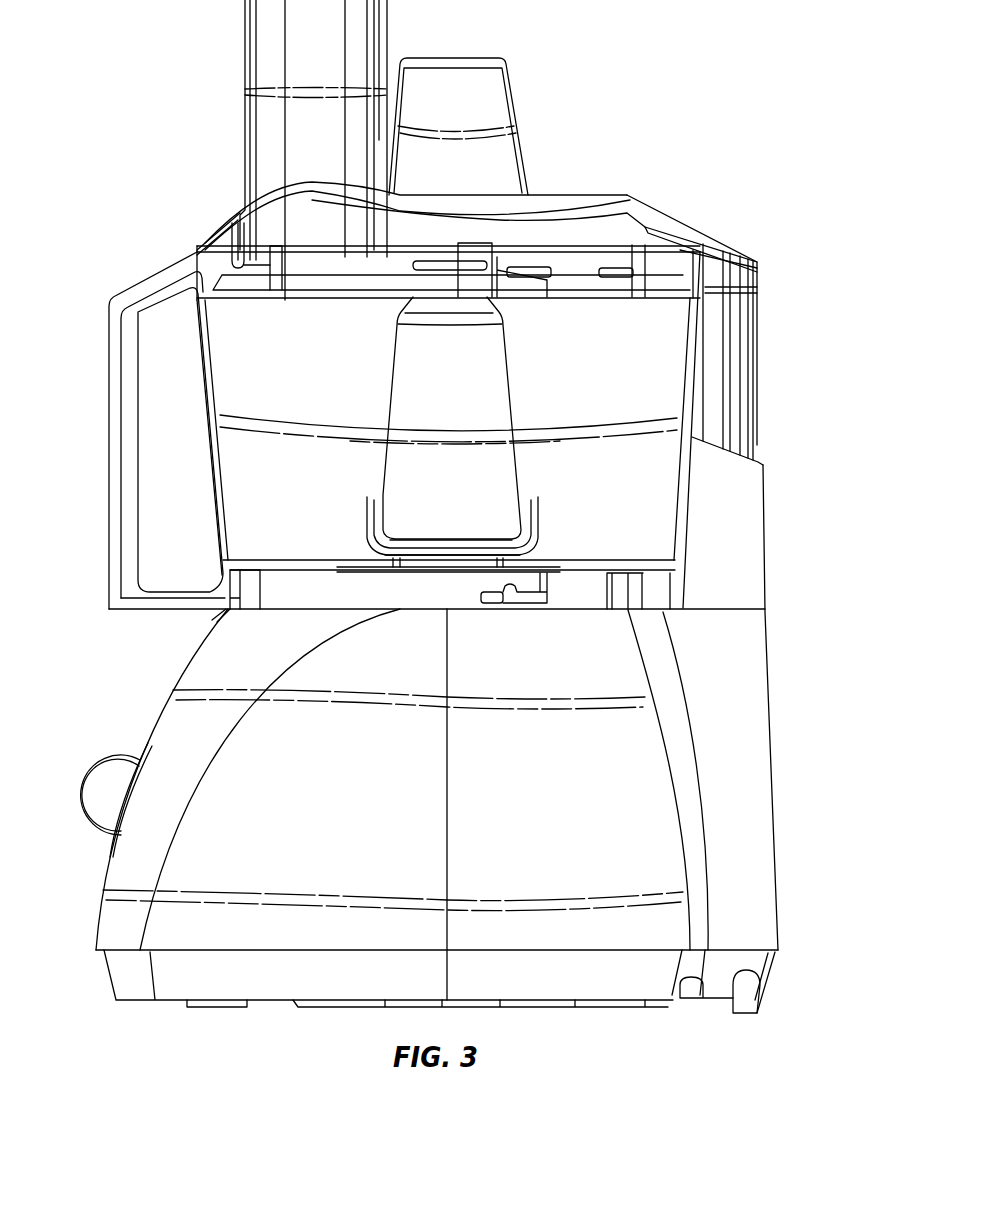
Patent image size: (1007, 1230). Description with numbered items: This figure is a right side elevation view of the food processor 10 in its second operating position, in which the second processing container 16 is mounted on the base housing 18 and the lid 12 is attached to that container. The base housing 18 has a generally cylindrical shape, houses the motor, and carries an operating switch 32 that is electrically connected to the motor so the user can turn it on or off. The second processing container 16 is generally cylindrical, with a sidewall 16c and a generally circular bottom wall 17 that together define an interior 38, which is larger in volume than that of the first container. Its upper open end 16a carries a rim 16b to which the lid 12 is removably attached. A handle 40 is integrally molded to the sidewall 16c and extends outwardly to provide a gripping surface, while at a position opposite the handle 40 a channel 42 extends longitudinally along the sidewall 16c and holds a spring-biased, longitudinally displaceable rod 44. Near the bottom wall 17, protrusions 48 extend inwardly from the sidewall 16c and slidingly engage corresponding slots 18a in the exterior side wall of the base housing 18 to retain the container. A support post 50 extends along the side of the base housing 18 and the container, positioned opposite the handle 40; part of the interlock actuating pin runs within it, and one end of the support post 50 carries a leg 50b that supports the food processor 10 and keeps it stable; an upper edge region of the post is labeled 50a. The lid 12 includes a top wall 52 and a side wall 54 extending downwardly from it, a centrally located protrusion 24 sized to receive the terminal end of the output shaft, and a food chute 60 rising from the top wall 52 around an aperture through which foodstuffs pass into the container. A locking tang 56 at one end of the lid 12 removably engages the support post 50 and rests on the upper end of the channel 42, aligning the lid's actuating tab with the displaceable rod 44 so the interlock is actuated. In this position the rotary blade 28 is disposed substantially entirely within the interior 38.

The food processor 10 is at (664, 34).
The lid 12 is at (628, 212).
The second processing container 16 is at (223, 372).
The upper open end 16a is at (200, 247).
The rim 16b is at (198, 252).
The sidewall 16c is at (228, 452).
The bottom wall 17 is at (222, 614).
The base housing 18 is at (167, 725).
The slots 18a is at (492, 605).
The protrusion 24 is at (492, 90).
The rotary blade 28 is at (400, 383).
The operating switch 32 is at (102, 772).
The interior 38 is at (232, 480).
The handle 40 is at (124, 350).
The channel 42 is at (745, 362).
The displaceable rod 44 is at (738, 332).
The protrusions 48 is at (512, 610).
The support post 50 is at (752, 540).
The side panel upper edge 50a is at (752, 507).
The leg 50b is at (748, 988).
The top wall 52 is at (597, 195).
The side wall 54 is at (656, 218).
The locking tang 56 is at (728, 245).
The food chute 60 is at (267, 48).